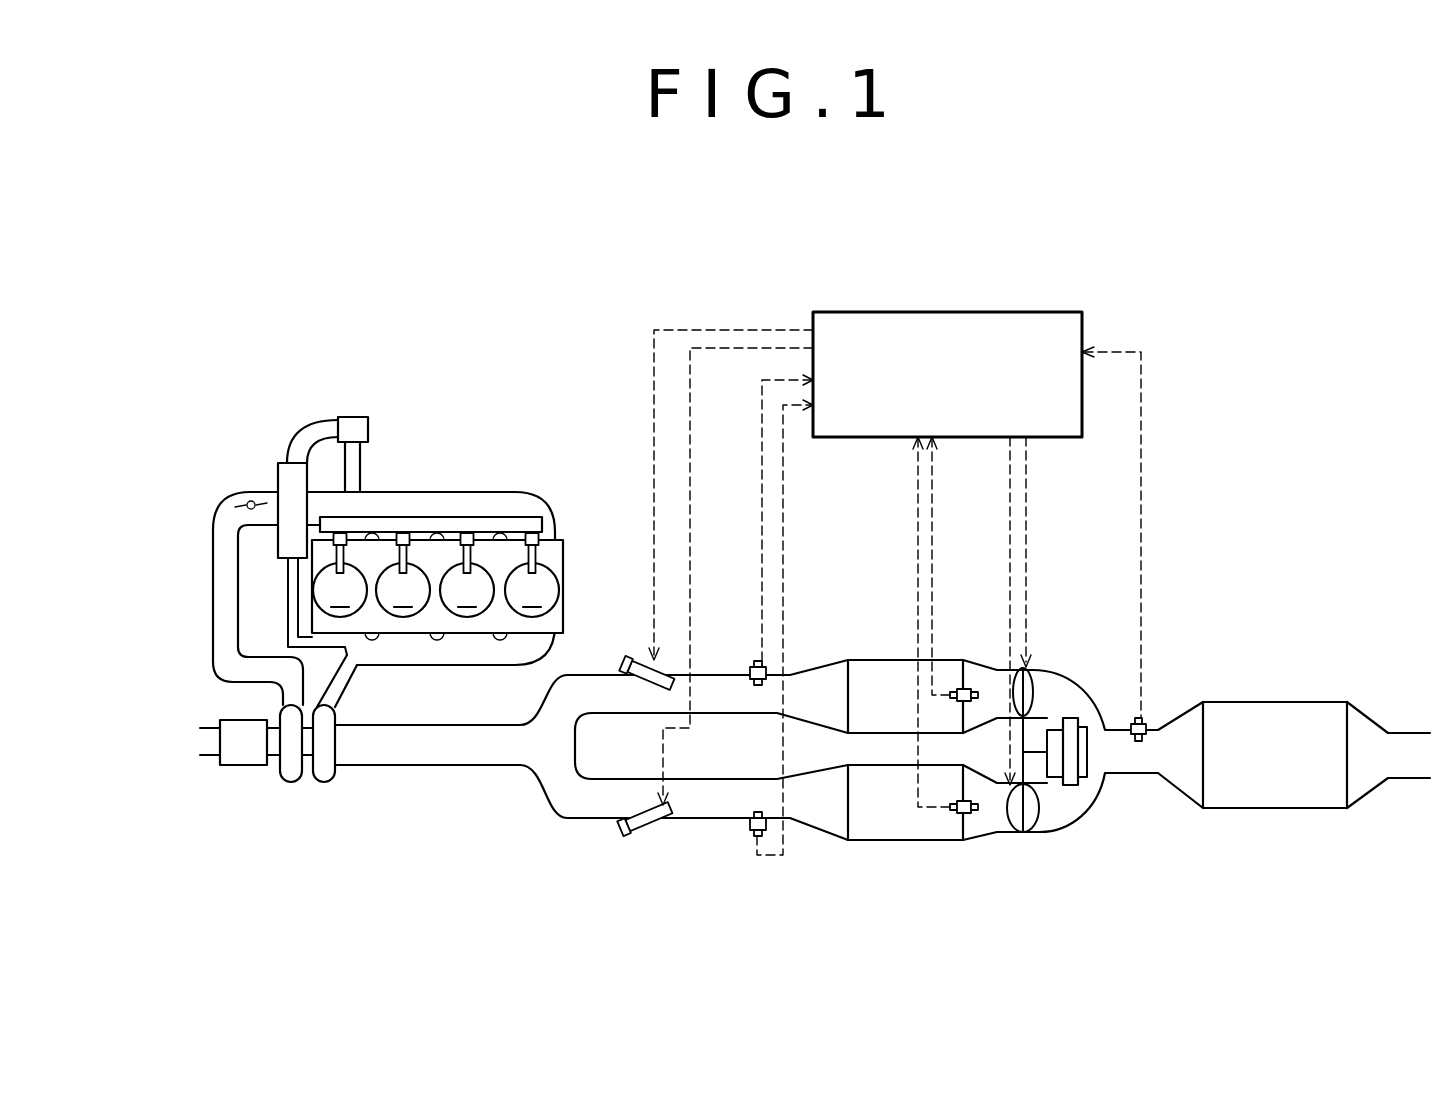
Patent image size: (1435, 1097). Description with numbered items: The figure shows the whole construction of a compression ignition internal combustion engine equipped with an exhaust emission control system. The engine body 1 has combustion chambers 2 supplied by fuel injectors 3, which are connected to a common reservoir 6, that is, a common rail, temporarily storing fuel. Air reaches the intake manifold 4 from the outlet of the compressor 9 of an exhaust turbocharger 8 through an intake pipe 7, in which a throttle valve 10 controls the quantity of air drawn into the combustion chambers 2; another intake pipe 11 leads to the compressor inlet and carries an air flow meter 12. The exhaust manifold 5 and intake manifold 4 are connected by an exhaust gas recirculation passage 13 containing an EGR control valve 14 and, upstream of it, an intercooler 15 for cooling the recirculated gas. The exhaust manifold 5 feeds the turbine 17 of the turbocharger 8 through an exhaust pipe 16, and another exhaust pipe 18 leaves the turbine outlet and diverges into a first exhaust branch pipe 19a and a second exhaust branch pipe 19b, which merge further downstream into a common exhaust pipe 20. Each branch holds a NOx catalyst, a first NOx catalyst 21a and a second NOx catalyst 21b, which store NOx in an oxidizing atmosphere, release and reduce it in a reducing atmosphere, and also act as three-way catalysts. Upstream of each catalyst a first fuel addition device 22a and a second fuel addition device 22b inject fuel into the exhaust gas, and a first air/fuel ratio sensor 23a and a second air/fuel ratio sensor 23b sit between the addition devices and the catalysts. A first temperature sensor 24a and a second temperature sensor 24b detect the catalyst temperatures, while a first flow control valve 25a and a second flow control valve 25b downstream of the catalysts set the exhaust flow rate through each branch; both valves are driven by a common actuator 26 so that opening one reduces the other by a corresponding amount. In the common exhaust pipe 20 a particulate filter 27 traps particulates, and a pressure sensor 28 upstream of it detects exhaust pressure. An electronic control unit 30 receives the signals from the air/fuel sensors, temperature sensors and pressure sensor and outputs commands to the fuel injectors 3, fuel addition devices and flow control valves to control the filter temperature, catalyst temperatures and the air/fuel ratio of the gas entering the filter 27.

The engine body 1 is at (590, 556).
The combustion chambers 2 is at (436, 590).
The fuel injectors 3 is at (532, 575).
The intake manifold 4 is at (478, 503).
The exhaust manifold 5 is at (455, 647).
The common reservoir 6 is at (408, 522).
The intake pipe 7 is at (222, 595).
The exhaust turbocharger 8 is at (311, 820).
The compressor 9 is at (287, 767).
The throttle valve 10 is at (240, 505).
The intake pipe 11 is at (213, 740).
The air flow meter 12 is at (243, 748).
The exhaust gas recirculation passage 13 is at (317, 433).
The EGR control valve 14 is at (353, 427).
The intercooler 15 is at (287, 477).
The exhaust pipe 16 is at (338, 687).
The turbine 17 is at (327, 772).
The exhaust pipe 18 is at (417, 748).
The first exhaust branch pipe 19a is at (727, 697).
The second exhaust branch pipe 19b is at (693, 808).
The common exhaust pipe 20 is at (1120, 742).
The first NOx catalyst 21a is at (904, 672).
The second NOx catalyst 21b is at (907, 822).
The first fuel addition device 22a is at (630, 660).
The second fuel addition device 22b is at (640, 830).
The first air/fuel ratio sensor 23a is at (762, 662).
The second air/fuel ratio sensor 23b is at (748, 832).
The first temperature sensor 24a is at (965, 688).
The second temperature sensor 24b is at (965, 822).
The first flow control valve 25a is at (1040, 672).
The second flow control valve 25b is at (1040, 822).
The common actuator 26 is at (1080, 780).
The particulate filter 27 is at (1268, 723).
The pressure sensor 28 is at (1142, 708).
The electronic control unit 30 is at (973, 311).